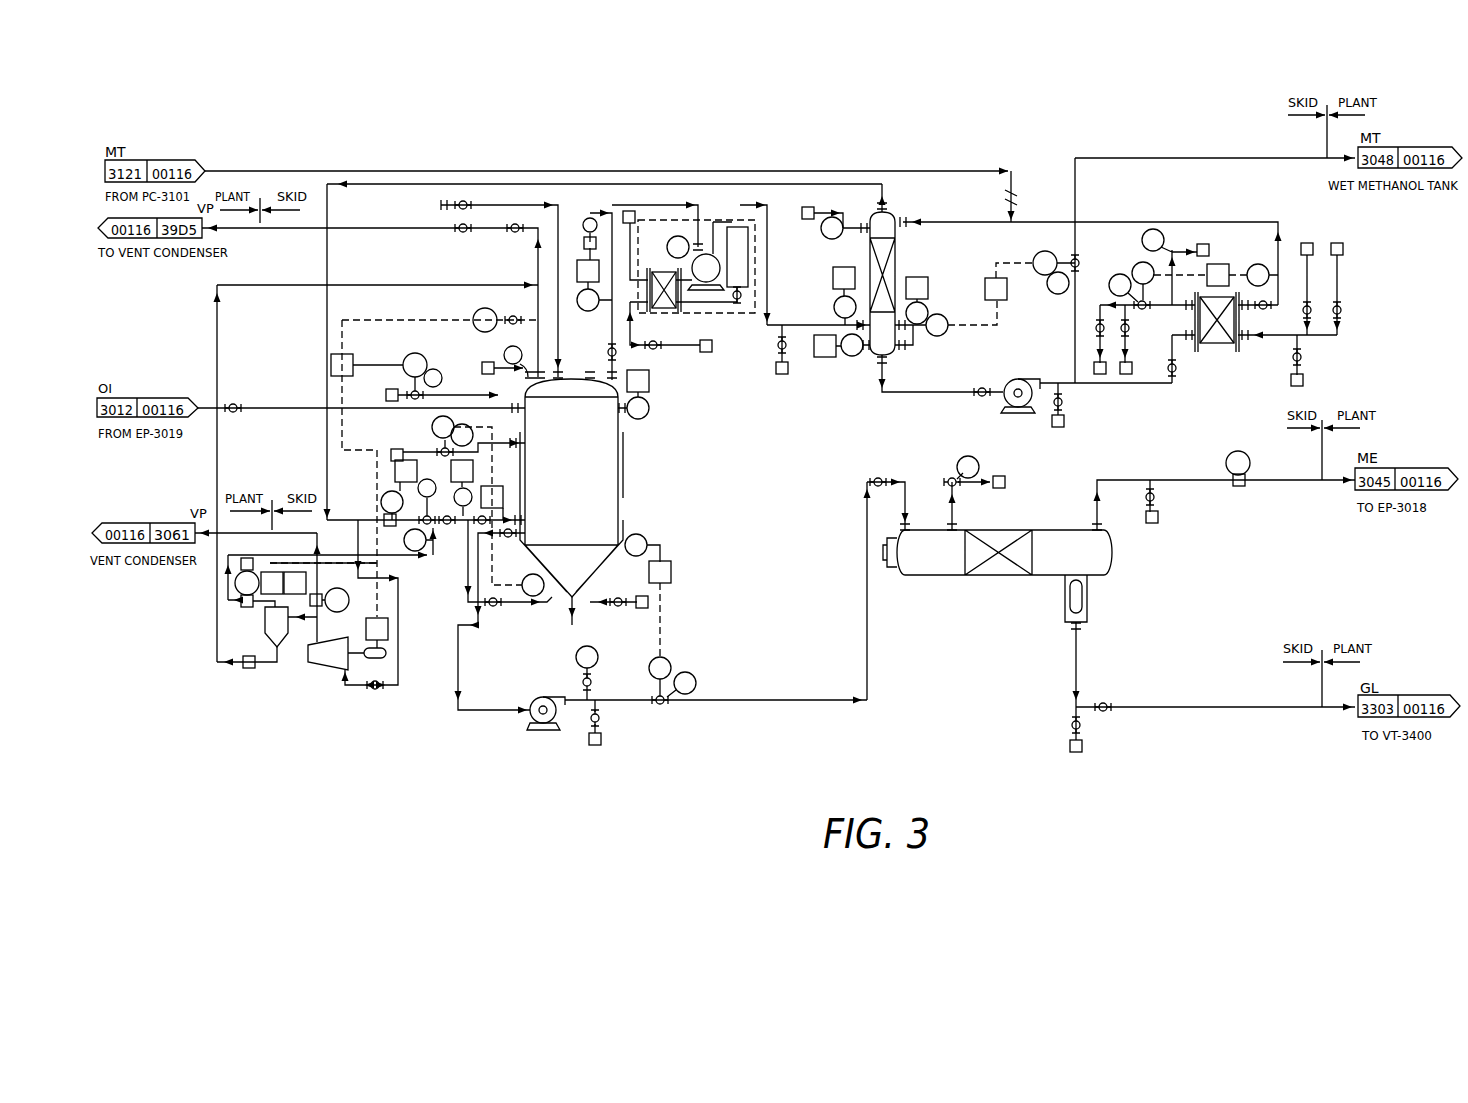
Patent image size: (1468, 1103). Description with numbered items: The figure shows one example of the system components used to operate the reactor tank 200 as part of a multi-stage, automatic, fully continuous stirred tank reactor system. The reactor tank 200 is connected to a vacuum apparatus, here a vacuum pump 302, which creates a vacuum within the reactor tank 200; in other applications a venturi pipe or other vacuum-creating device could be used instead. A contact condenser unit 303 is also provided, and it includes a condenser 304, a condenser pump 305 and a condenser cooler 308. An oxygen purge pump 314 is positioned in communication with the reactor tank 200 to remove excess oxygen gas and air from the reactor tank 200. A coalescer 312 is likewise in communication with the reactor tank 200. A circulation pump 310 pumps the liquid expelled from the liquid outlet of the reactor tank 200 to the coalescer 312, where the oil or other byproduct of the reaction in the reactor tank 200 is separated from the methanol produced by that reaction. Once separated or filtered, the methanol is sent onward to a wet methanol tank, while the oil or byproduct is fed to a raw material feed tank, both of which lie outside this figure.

The reactor tank 200 is at (590, 469).
The vacuum pump 302 is at (728, 328).
The contact condenser unit 303 is at (1048, 196).
The condenser 304 is at (880, 352).
The condenser pump 305 is at (1016, 377).
The condenser cooler 308 is at (1216, 346).
The circulation pump 310 is at (545, 730).
The coalescer 312 is at (1002, 540).
The oxygen purge pump 314 is at (325, 655).